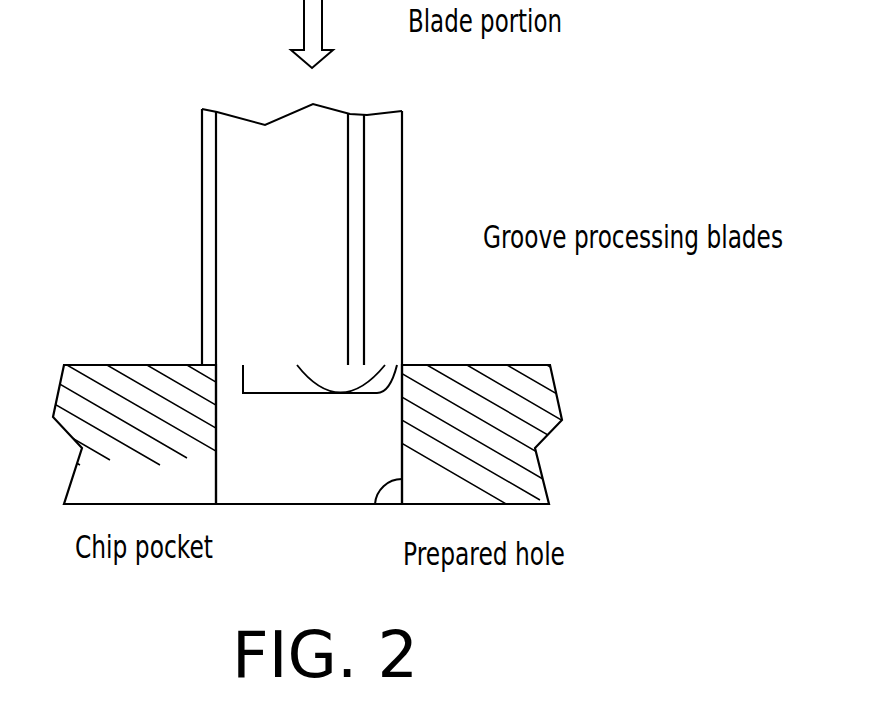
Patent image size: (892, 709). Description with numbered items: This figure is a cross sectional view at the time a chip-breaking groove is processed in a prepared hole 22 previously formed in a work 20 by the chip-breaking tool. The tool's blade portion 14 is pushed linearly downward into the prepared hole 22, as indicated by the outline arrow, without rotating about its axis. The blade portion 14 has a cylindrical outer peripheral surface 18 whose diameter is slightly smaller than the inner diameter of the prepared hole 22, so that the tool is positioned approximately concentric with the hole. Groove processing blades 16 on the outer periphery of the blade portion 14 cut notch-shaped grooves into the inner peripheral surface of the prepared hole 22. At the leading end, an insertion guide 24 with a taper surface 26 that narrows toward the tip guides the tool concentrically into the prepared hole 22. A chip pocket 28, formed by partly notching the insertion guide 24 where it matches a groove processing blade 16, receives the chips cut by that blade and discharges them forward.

The blade portion 14 is at (437, 144).
The groove processing blades 16 is at (208, 264).
The cylindrical outer peripheral surface 18 is at (240, 193).
The work 20 is at (100, 380).
The prepared hole 22 is at (375, 505).
The insertion guide 24 is at (285, 404).
The taper surface 26 is at (404, 393).
The chip pocket 28 is at (243, 380).